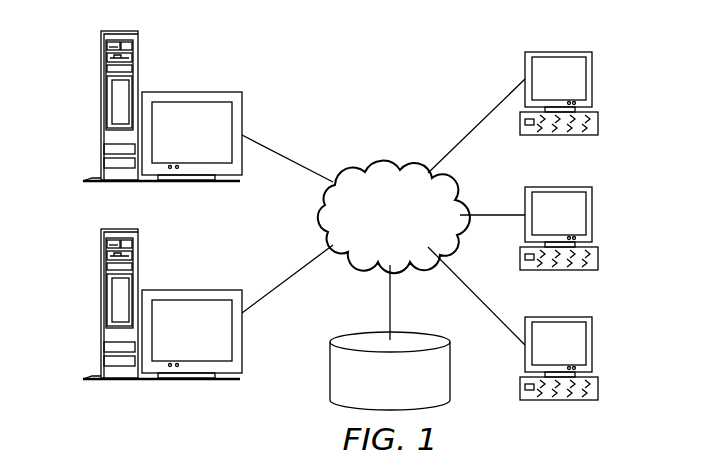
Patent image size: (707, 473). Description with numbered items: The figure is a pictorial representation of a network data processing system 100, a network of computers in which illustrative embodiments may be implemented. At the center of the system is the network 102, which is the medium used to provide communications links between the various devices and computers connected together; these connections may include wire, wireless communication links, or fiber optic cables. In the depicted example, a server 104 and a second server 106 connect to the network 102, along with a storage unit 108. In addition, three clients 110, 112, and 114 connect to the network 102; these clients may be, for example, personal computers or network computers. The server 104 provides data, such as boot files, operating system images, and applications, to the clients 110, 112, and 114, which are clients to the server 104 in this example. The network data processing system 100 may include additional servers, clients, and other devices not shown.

The network data processing system 100 is at (436, 72).
The network 102 is at (362, 170).
The server 104 is at (101, 107).
The server 106 is at (101, 305).
The storage unit 108 is at (330, 380).
The client 110 is at (592, 78).
The client 112 is at (592, 213).
The client 114 is at (592, 348).